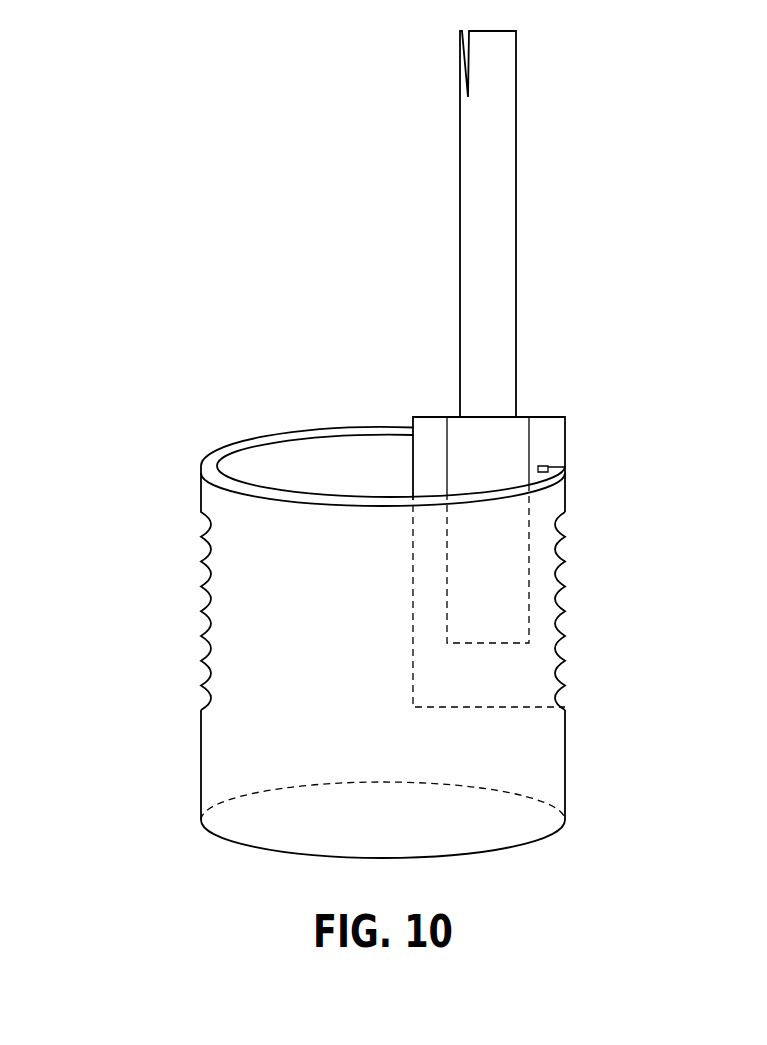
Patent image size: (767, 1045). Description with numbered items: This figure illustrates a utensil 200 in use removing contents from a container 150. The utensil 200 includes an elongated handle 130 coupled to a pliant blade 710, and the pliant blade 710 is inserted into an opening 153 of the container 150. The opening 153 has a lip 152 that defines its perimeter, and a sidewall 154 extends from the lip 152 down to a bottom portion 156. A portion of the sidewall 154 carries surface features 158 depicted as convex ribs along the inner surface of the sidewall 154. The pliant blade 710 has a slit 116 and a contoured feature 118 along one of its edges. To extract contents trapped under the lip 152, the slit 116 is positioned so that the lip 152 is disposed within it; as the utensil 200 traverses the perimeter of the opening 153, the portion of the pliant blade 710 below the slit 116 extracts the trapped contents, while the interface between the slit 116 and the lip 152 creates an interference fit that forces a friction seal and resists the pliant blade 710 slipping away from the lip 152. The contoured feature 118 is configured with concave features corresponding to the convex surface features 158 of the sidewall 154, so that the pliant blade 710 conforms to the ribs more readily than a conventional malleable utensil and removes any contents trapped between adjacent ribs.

The utensil 200 is at (679, 180).
The elongated handle 130 is at (380, 147).
The pliant blade 710 is at (543, 392).
The slit 116 is at (543, 465).
The container 150 is at (157, 440).
The lip 152 is at (370, 427).
The opening 153 is at (280, 462).
The surface features 158 is at (206, 567).
The contoured feature 118 is at (549, 537).
The sidewall 154 is at (566, 722).
The bottom portion 156 is at (203, 835).